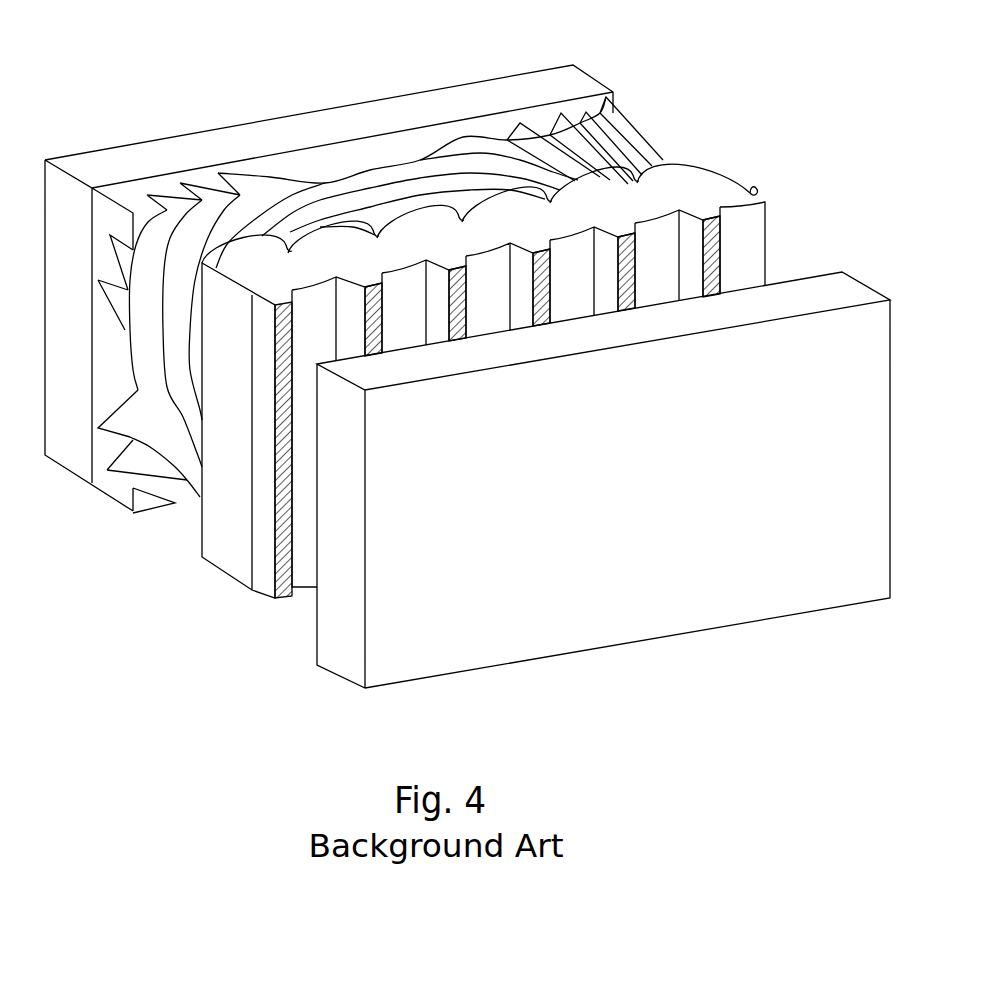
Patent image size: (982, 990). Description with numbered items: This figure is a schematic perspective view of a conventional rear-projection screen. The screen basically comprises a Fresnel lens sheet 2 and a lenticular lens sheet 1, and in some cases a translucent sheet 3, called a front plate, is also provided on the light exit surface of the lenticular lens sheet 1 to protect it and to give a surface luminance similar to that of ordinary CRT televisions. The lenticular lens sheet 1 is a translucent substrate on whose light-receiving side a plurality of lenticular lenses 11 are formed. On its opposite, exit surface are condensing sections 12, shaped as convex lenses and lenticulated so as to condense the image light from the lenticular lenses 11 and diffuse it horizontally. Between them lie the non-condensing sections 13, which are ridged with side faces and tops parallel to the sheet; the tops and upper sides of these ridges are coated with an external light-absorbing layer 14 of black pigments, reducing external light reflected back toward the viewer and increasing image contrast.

The lenticular lens sheet 1 is at (713, 180).
The Fresnel lens sheet 2 is at (485, 90).
The translucent sheet 3 is at (838, 283).
The lenticular lenses 11 is at (677, 156).
The condensing sections 12 is at (754, 197).
The non-condensing sections 13 is at (263, 583).
The external light-absorbing layer 14 is at (283, 596).